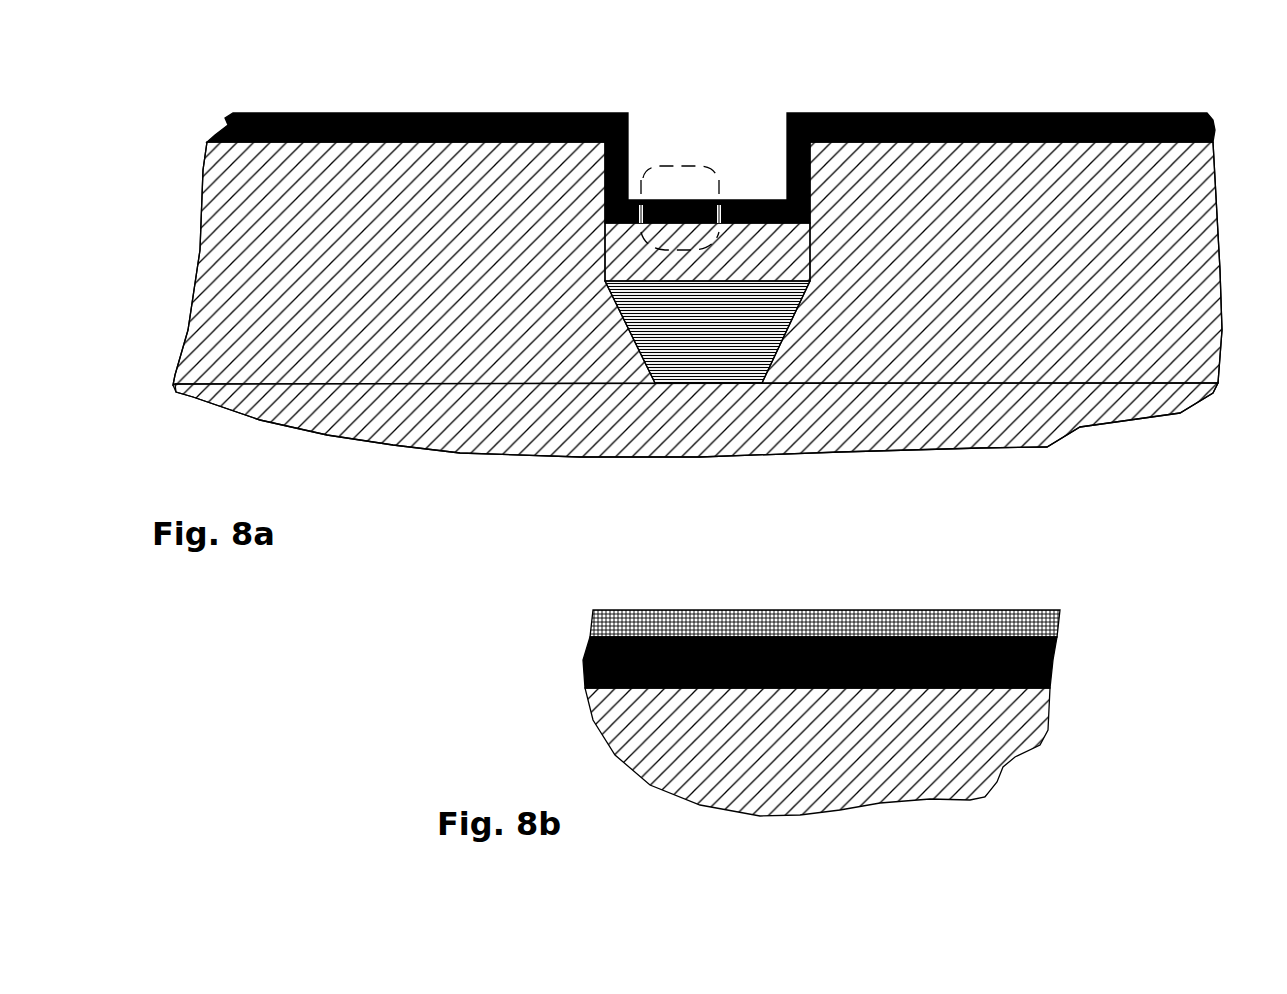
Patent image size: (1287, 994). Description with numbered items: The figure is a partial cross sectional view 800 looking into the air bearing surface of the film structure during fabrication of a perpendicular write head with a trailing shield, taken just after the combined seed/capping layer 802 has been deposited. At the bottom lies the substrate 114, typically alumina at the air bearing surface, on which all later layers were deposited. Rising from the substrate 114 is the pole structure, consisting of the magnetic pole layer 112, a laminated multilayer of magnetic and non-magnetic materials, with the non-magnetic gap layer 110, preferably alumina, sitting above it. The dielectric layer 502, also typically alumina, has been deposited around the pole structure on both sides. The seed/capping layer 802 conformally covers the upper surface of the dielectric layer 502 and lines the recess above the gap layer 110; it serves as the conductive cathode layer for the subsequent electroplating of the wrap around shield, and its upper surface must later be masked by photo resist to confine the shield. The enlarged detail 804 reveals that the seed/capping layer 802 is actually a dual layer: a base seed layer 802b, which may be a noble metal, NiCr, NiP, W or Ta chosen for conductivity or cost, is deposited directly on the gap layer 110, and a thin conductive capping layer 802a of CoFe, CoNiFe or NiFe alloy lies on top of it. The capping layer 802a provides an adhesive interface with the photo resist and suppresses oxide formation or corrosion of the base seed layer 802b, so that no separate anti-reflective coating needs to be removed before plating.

In FIG. 8A, the partial cross sectional view 800 is at (720, 97).
In FIG. 8A, the seed/capping layer 802 is at (1112, 112).
In FIG. 8A, the detail 804 is at (680, 165).
In FIG. 8B, the detail 804 is at (856, 617).
In FIG. 8A, the dielectric layer 502 is at (410, 320).
In FIG. 8A, the gap layer 110 is at (790, 265).
In FIG. 8B, the gap layer 110 is at (855, 756).
In FIG. 8A, the pole layer 112 is at (740, 357).
In FIG. 8A, the substrate 114 is at (710, 443).
In FIG. 8B, the conductive capping layer 802a is at (650, 610).
In FIG. 8B, the base seed layer 802b is at (850, 676).